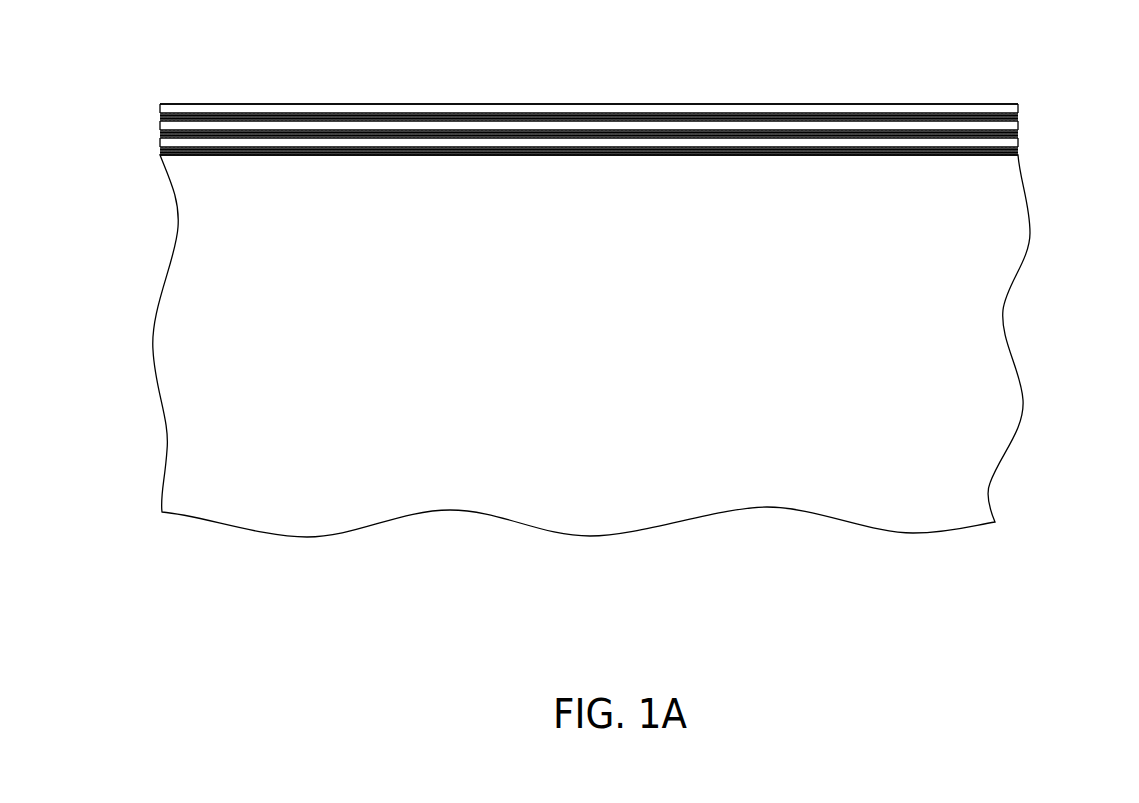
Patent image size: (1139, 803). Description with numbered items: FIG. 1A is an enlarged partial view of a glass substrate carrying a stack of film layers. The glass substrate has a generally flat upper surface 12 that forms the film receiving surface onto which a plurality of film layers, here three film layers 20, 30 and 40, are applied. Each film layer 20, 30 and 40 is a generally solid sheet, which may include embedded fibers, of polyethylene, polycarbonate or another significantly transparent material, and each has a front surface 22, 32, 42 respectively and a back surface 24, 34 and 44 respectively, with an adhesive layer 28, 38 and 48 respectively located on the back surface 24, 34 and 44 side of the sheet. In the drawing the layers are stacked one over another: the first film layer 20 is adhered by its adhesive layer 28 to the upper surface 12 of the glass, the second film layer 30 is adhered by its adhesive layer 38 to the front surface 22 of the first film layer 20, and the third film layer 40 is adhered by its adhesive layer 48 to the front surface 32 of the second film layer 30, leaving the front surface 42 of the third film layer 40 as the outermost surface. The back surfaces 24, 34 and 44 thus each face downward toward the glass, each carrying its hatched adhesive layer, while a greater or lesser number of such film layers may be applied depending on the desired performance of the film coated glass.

The generally flat upper surface 12 is at (713, 147).
The film layer 20 is at (1019, 144).
The front surface 22 is at (487, 131).
The back surface 24 is at (463, 153).
The adhesive layer 28 is at (160, 150).
The film layer 30 is at (1019, 125).
The front surface 32 is at (333, 117).
The back surface 34 is at (563, 138).
The adhesive layer 38 is at (160, 135).
The film layer 40 is at (1018, 111).
The front surface 42 is at (243, 105).
The back surface 44 is at (633, 122).
The adhesive layer 48 is at (160, 118).